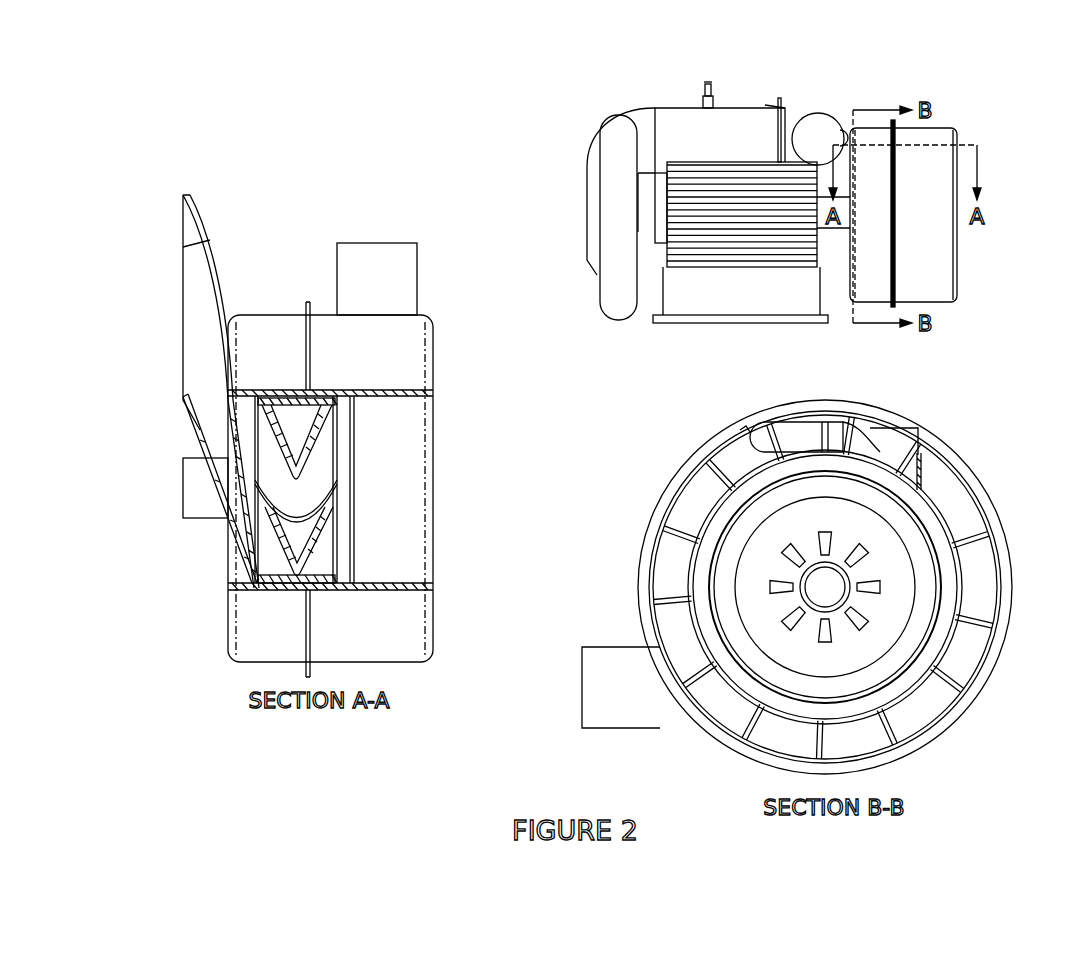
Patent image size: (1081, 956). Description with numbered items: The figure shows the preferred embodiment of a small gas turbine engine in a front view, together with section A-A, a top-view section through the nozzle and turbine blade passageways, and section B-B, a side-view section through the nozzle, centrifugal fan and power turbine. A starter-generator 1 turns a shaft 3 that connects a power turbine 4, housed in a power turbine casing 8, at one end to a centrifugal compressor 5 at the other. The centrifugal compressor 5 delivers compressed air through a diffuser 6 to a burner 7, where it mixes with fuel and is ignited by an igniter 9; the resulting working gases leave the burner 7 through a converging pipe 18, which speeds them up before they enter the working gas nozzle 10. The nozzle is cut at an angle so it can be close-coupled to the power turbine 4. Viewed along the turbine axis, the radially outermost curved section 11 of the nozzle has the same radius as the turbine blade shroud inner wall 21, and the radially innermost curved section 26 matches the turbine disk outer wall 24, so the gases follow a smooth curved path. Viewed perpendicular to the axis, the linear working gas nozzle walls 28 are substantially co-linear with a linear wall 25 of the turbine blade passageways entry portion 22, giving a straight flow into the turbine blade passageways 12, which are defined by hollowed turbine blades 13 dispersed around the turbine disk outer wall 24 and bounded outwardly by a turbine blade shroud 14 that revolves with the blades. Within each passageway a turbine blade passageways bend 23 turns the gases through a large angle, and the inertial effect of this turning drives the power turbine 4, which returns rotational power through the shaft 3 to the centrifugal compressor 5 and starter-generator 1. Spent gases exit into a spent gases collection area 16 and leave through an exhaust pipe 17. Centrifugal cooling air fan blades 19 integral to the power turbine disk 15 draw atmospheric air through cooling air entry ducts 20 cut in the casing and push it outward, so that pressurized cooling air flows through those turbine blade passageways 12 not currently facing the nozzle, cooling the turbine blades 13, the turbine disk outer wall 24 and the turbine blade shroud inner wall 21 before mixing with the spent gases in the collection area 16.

The starter-generator 1 is at (764, 270).
The shaft 3 is at (840, 577).
The power turbine 4 is at (247, 433).
The centrifugal compressor 5 is at (620, 283).
The diffuser 6 is at (645, 190).
The burner 7 is at (765, 105).
The power turbine casing 8 is at (935, 302).
The igniter 9 is at (705, 100).
The working gas nozzle 10 is at (213, 480).
The curved section (radially outermost wall) 11 is at (877, 441).
The turbine blade passageways 12 is at (323, 453).
The turbine blades 13 is at (317, 433).
The turbine blade shroud 14 is at (287, 397).
The power turbine disk 15 is at (433, 467).
The spent gases collection area 16 is at (383, 560).
The exhaust pipe 17 is at (337, 290).
The converging pipe 18 is at (197, 305).
The centrifugal cooling air fan blades 19 is at (920, 493).
The cooling air entry ducts 20 is at (777, 590).
The turbine blade shroud inner wall 21 is at (975, 620).
The turbine blade passageways entry portion 22 is at (256, 398).
The turbine blade passageways bend 23 is at (333, 472).
The turbine disk outer wall 24 is at (347, 463).
The linear wall 25 is at (273, 460).
The curved section (radially innermost wall) 26 is at (843, 437).
The linear working gas nozzle walls 28 is at (247, 473).